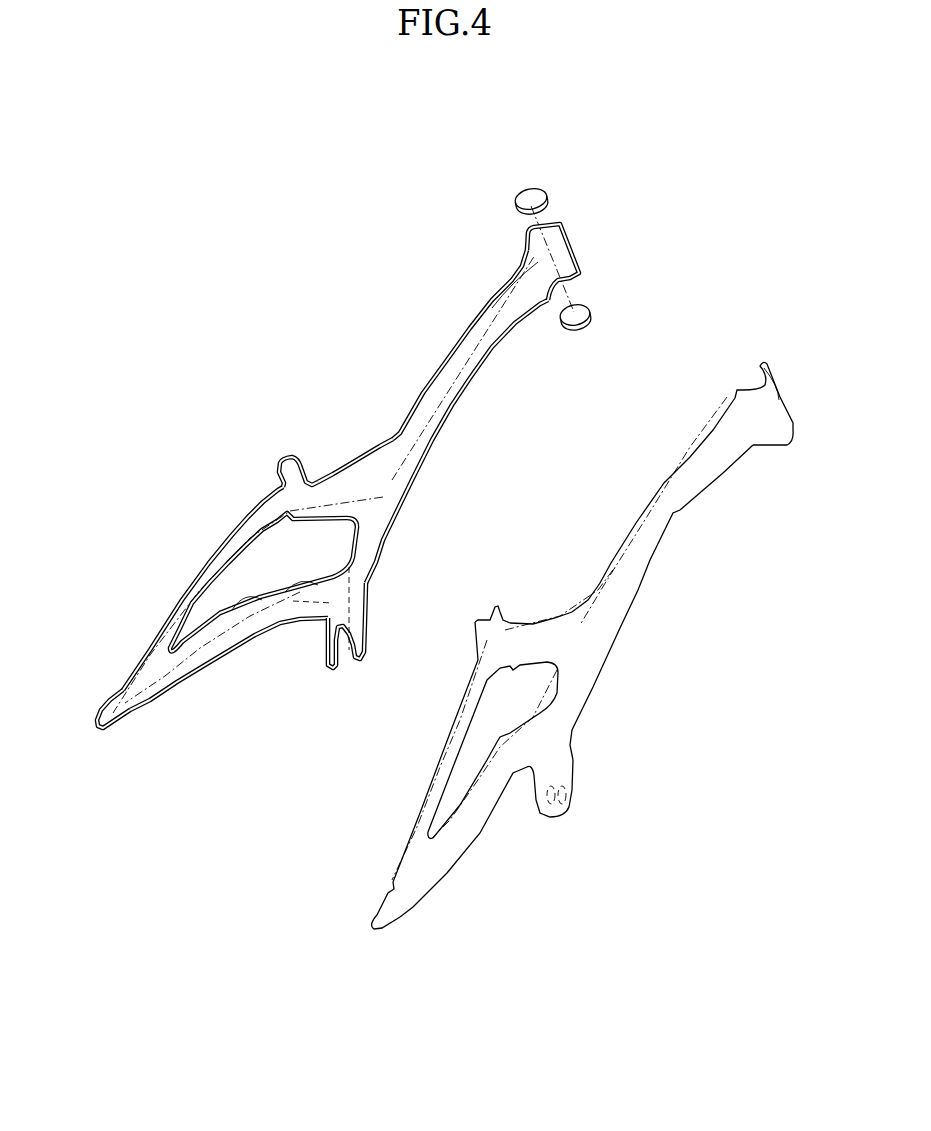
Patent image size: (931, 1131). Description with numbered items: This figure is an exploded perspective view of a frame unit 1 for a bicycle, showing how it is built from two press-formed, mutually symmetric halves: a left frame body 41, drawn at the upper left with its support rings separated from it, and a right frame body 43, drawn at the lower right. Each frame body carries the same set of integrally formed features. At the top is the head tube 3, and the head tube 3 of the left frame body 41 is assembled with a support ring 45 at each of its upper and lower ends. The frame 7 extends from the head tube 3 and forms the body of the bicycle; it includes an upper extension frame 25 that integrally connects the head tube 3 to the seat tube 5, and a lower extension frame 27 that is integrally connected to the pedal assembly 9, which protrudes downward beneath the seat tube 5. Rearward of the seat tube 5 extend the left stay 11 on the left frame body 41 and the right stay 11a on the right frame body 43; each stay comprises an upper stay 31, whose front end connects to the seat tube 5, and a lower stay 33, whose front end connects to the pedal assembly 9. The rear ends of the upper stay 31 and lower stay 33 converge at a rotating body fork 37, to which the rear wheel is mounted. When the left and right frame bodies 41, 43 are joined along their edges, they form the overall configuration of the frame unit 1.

The frame unit 1 is at (278, 321).
The head tube 3 is at (574, 246).
The seat tube 5 is at (281, 462).
The frame 7 is at (452, 351).
The pedal assembly 9 is at (338, 660).
The left stay 11 is at (179, 577).
The right stay 11a is at (404, 791).
The upper extension frame 25 is at (334, 472).
The lower extension frame 27 is at (429, 486).
The upper stay 31 is at (220, 548).
The lower stay 33 is at (173, 688).
The rotating body fork 37 is at (105, 706).
The left frame body 41 is at (383, 413).
The right frame body 43 is at (658, 651).
The support ring 45 is at (547, 193).